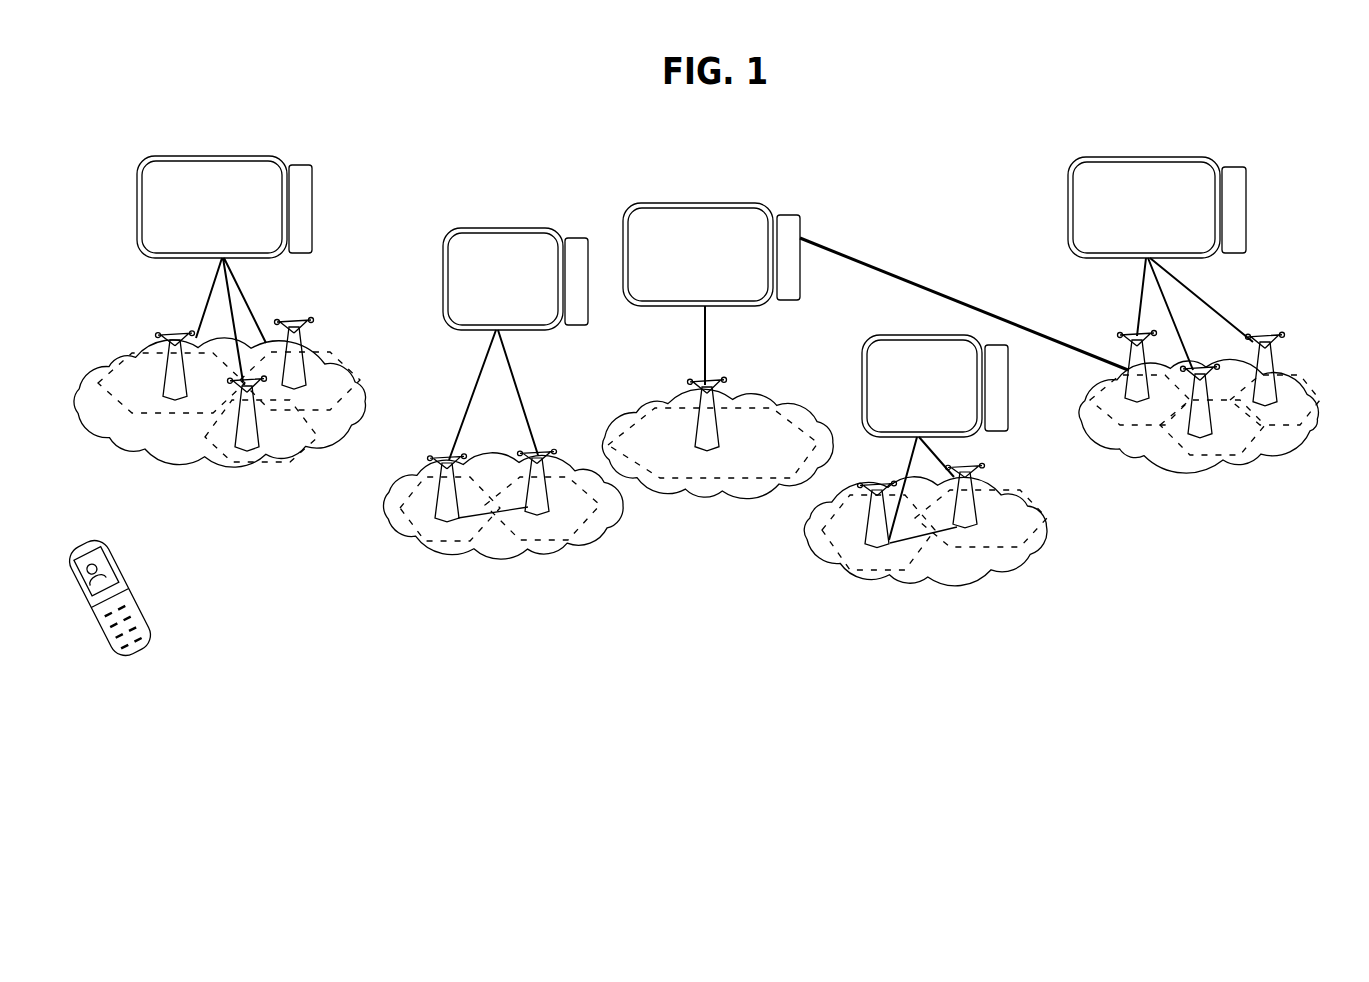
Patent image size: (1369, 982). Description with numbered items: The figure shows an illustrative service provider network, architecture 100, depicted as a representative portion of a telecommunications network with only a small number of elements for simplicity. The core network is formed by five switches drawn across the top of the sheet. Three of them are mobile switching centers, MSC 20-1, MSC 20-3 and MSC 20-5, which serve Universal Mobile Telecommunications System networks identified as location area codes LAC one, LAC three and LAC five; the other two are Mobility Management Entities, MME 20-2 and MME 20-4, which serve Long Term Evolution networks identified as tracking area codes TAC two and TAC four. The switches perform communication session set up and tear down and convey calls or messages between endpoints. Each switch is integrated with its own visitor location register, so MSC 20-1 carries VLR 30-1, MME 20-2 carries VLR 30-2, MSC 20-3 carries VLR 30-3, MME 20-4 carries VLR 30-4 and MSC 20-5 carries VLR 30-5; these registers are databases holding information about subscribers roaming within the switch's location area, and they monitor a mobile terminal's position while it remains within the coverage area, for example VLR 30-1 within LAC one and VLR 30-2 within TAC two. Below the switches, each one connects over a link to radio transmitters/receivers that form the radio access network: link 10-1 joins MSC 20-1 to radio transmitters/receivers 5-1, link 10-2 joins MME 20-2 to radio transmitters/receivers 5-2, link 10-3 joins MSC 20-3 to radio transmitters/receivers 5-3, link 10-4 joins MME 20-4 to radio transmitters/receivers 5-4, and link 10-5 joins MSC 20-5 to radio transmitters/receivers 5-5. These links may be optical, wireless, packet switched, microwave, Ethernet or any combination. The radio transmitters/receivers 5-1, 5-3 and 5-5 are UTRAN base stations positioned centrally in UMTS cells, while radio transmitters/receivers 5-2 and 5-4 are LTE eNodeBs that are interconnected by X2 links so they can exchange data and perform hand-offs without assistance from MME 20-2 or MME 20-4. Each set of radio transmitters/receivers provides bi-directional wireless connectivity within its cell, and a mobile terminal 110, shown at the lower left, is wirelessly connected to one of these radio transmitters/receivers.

The architecture 100 is at (706, 408).
The mobile terminal 110 is at (128, 566).
The mobile switching center 20-1 is at (212, 207).
The Mobility Management Entity 20-2 is at (503, 279).
The mobile switching center 20-3 is at (698, 254).
The Mobility Management Entity 20-4 is at (922, 386).
The mobile switching center 20-5 is at (1144, 207).
The visitor location register 30-1 is at (316, 201).
The visitor location register 30-2 is at (588, 305).
The visitor location register 30-3 is at (802, 228).
The visitor location register 30-4 is at (1008, 378).
The visitor location register 30-5 is at (1248, 196).
The link 10-1 is at (256, 297).
The link 10-2 is at (516, 385).
The link 10-3 is at (708, 340).
The link 10-4 is at (950, 453).
The link 10-5 is at (1205, 298).
The radio transmitters/receivers 5-1 is at (340, 340).
The radio transmitters/receivers 5-2 is at (580, 460).
The radio transmitters/receivers 5-3 is at (652, 410).
The radio transmitters/receivers 5-4 is at (836, 503).
The radio transmitters/receivers 5-5 is at (1085, 410).